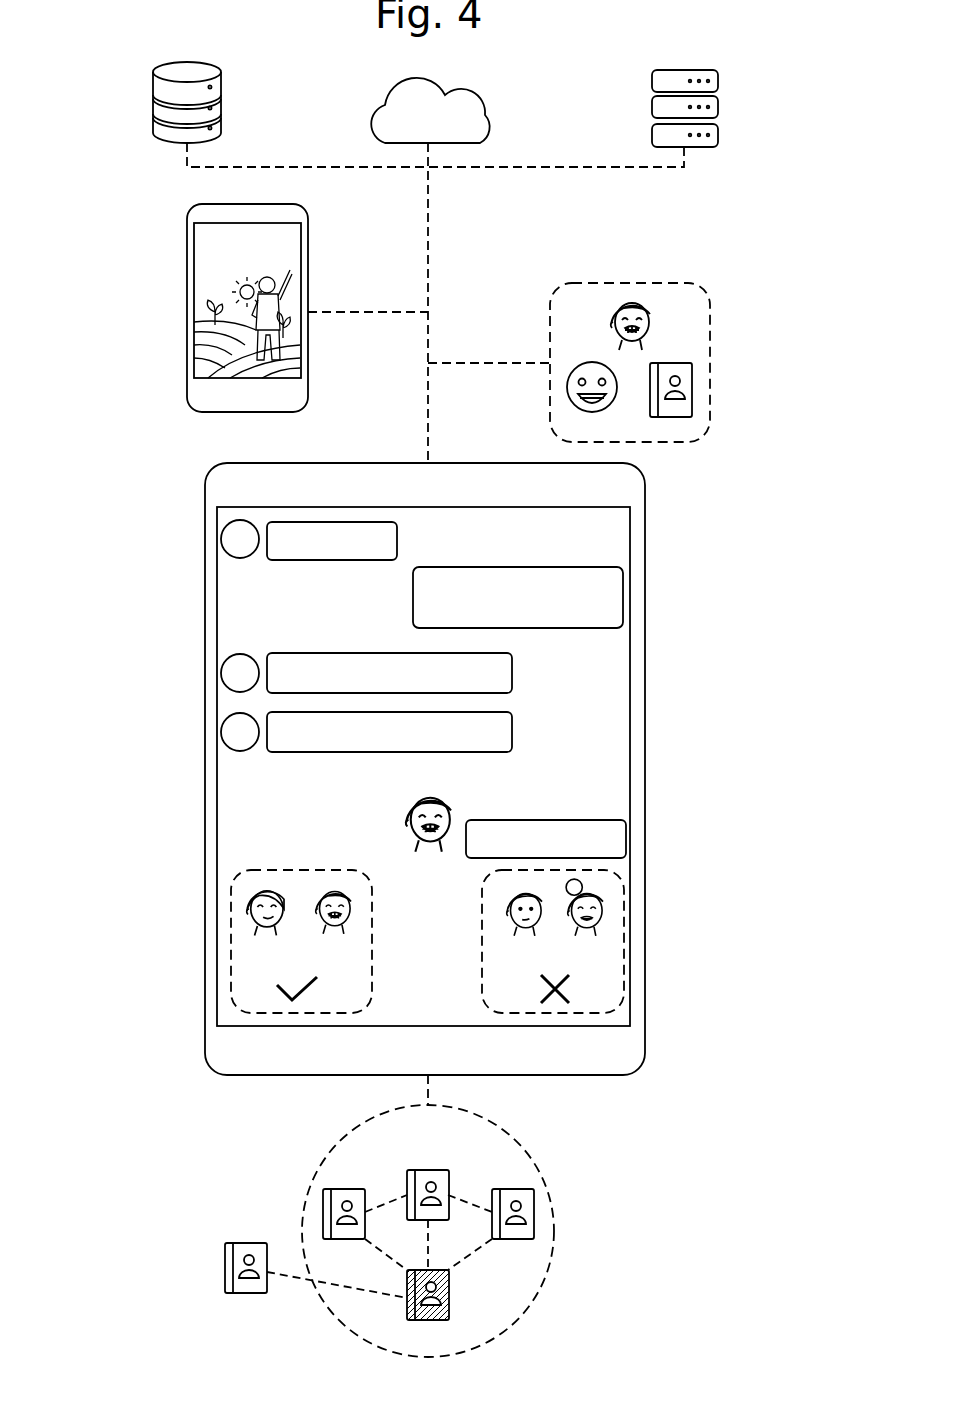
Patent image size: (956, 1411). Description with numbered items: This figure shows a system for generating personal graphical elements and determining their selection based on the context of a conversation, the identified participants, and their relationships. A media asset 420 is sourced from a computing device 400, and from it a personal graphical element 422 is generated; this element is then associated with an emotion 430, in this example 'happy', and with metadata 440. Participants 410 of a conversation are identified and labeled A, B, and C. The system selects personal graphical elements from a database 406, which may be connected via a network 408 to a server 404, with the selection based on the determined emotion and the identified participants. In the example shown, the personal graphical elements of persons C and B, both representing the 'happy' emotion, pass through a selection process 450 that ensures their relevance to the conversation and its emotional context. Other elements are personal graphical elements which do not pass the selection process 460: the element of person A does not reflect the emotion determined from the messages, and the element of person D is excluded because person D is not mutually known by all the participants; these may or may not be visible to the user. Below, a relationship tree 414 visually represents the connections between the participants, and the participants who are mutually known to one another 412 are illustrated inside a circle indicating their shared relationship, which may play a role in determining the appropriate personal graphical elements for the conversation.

The computing device 400 is at (210, 308).
The server 404 is at (718, 103).
The database 406 is at (153, 108).
The network 408 is at (495, 118).
The participants 410 is at (208, 535).
The participants who are mutually known to one another 412 is at (560, 1210).
The relationship tree 414 is at (225, 1268).
The media asset 420 is at (266, 256).
The personal graphical element 422 is at (633, 290).
The emotion 430 is at (568, 400).
The metadata 440 is at (692, 392).
The selection process 450 is at (443, 782).
The personal graphical elements which do not pass the selection process 460 is at (633, 936).